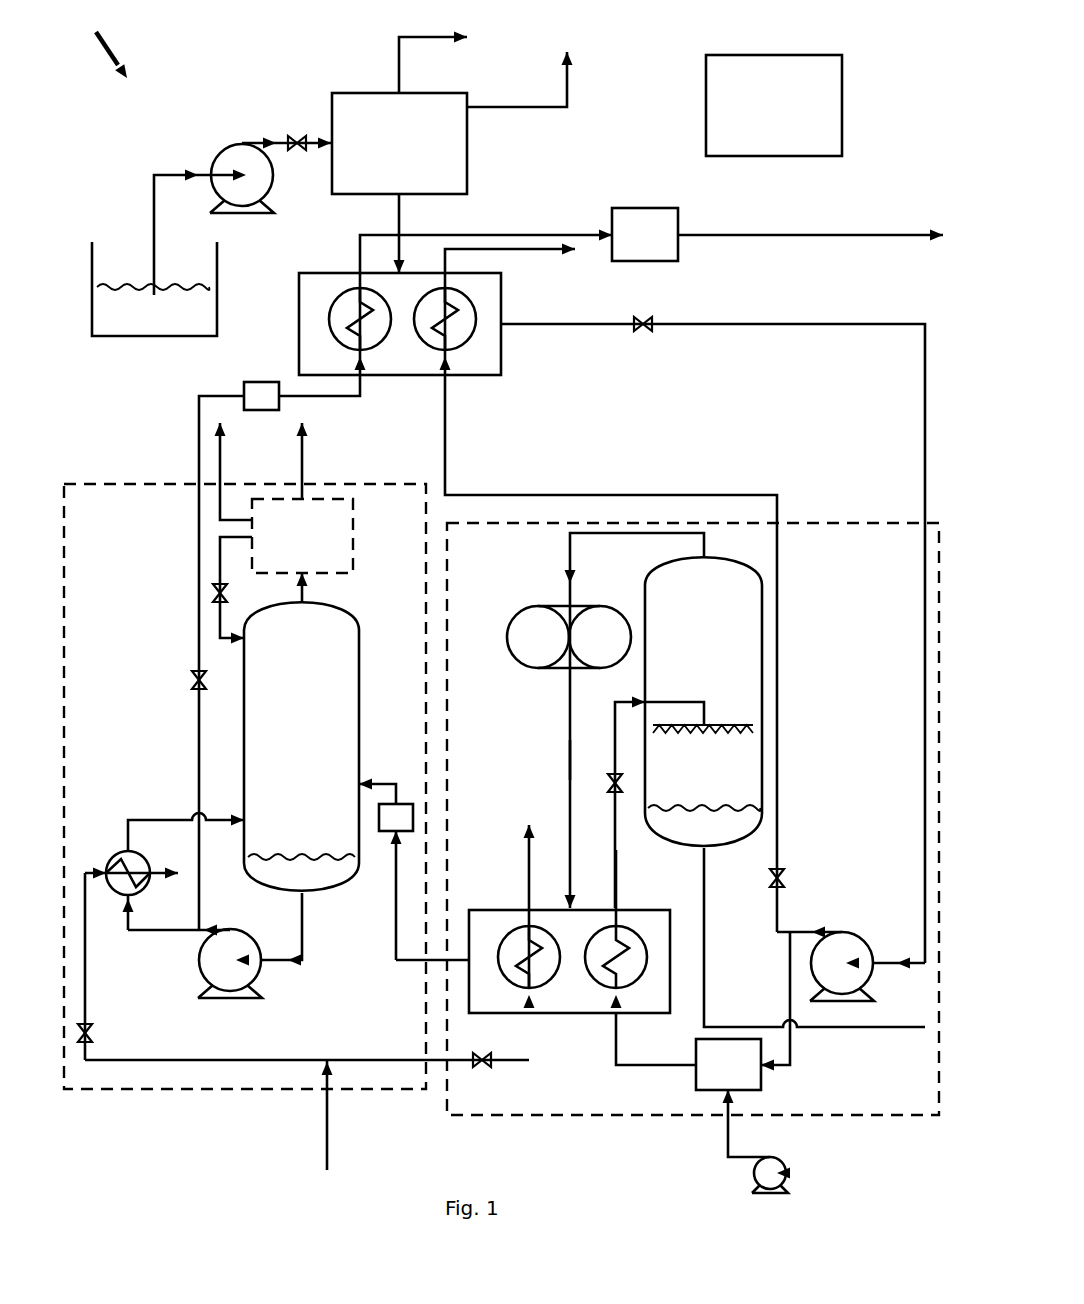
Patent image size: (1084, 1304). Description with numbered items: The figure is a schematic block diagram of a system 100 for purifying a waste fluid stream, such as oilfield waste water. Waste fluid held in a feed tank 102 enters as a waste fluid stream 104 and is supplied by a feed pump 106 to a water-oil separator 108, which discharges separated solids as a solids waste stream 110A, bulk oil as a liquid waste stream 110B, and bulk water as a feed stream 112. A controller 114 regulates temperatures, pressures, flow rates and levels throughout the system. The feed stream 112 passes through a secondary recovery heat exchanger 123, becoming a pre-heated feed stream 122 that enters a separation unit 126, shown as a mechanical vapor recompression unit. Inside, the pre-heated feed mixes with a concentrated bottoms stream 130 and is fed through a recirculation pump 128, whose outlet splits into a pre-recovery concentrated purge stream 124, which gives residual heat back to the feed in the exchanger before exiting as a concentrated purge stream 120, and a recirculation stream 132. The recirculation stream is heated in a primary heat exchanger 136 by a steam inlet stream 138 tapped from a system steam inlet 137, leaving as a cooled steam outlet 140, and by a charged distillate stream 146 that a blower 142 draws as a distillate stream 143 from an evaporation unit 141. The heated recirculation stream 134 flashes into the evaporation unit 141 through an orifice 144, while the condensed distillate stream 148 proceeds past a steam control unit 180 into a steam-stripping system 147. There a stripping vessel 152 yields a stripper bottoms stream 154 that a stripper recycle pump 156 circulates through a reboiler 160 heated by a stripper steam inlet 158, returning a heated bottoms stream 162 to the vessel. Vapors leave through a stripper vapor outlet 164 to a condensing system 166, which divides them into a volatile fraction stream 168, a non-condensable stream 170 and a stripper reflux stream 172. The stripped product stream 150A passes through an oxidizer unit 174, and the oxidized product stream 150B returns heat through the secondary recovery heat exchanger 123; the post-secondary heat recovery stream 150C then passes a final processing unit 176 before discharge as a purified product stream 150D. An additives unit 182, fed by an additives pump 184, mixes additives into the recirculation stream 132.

The system 100 is at (102, 44).
The feed tank 102 is at (135, 329).
The waste fluid stream 104 is at (160, 182).
The feed pump 106 is at (243, 143).
The water-oil separator 108 is at (380, 156).
The solids waste stream 110A is at (399, 40).
The liquid waste stream 110B is at (567, 80).
The feed stream 112 is at (399, 212).
The controller 114 is at (755, 132).
The concentrated purge stream 120 is at (548, 255).
The pre-heated feed stream 122 is at (903, 324).
The secondary recovery heat exchanger 123 is at (490, 378).
The pre-recovery concentrated purge stream 124 is at (640, 495).
The separation unit 126 is at (828, 523).
The recirculation pump 128 is at (838, 932).
The concentrated bottoms stream 130 is at (705, 928).
The recirculation stream 132 is at (635, 1068).
The heated recirculation stream 134 is at (620, 868).
The primary heat exchanger 136 is at (570, 1013).
The system steam inlet 137 is at (325, 1127).
The steam inlet stream 138 is at (428, 1062).
The cooled steam outlet 140 is at (526, 862).
The evaporation unit 141 is at (685, 669).
The blower 142 is at (596, 606).
The distillate stream 143 is at (568, 553).
The orifice 144 is at (612, 765).
The charged distillate stream 146 is at (568, 760).
The steam-stripping system 147 is at (82, 484).
The condensed distillate stream 148 is at (396, 960).
The stripped product stream 150A is at (199, 615).
The oxidized product stream 150B is at (361, 397).
The post-secondary heat recovery stream 150C is at (510, 235).
The purified product stream 150D is at (915, 235).
The stripping vessel 152 is at (283, 752).
The stripper bottoms stream 154 is at (305, 905).
The stripper recycle pump 156 is at (262, 998).
The stripper steam inlet 158 is at (88, 998).
The reboiler 160 is at (113, 858).
The heated bottoms stream 162 is at (160, 820).
The stripper vapor outlet 164 is at (305, 612).
The condensing system 166 is at (283, 544).
The volatile fraction stream 168 is at (222, 455).
The non-condensable stream 170 is at (305, 455).
The stripper reflux stream 172 is at (220, 560).
The oxidizer unit 174 is at (260, 382).
The final processing unit 176 is at (626, 246).
The steam control unit 180 is at (413, 810).
The additives unit 182 is at (709, 1076).
The additives pump 184 is at (790, 1173).